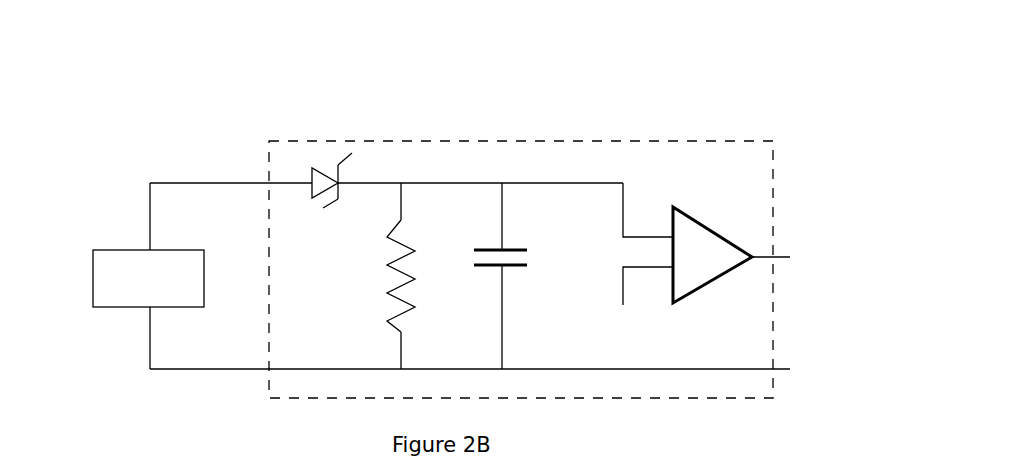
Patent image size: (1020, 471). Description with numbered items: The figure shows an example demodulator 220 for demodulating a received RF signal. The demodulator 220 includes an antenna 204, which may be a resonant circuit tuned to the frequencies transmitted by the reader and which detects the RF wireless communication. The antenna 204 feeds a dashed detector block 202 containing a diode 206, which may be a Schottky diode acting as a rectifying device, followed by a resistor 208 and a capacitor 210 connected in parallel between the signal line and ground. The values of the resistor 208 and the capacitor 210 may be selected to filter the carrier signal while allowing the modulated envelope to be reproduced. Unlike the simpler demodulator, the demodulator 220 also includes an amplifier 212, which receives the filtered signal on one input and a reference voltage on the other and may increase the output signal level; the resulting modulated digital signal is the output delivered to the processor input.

The demodulator 220 is at (699, 72).
The detector circuit 202 is at (267, 162).
The antenna 204 is at (126, 310).
The diode 206 is at (314, 162).
The resistor 208 is at (398, 300).
The capacitor 210 is at (510, 268).
The amplifier 212 is at (688, 207).